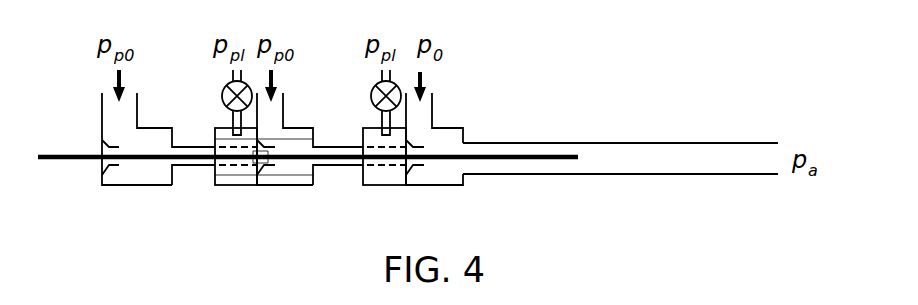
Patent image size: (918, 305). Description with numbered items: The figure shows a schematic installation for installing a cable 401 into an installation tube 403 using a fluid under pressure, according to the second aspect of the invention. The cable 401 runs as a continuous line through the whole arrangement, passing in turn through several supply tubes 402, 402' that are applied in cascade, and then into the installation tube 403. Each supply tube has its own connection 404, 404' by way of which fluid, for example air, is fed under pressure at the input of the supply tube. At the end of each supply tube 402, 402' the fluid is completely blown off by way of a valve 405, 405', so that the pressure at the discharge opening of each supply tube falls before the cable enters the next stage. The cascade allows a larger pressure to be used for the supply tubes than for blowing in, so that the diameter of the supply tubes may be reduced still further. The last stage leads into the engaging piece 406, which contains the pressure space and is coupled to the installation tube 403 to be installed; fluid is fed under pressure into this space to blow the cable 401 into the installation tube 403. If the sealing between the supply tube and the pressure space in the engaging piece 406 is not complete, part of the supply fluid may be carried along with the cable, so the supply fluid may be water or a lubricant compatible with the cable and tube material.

The cable 401 is at (75, 159).
The supply tube 402 is at (189, 193).
The supply tube 402' is at (336, 193).
The installation tube 403 is at (585, 174).
The connection 404 is at (130, 132).
The connection 404' is at (310, 139).
The valve 405 is at (235, 117).
The valve 405' is at (357, 121).
The engaging piece 406 is at (453, 187).